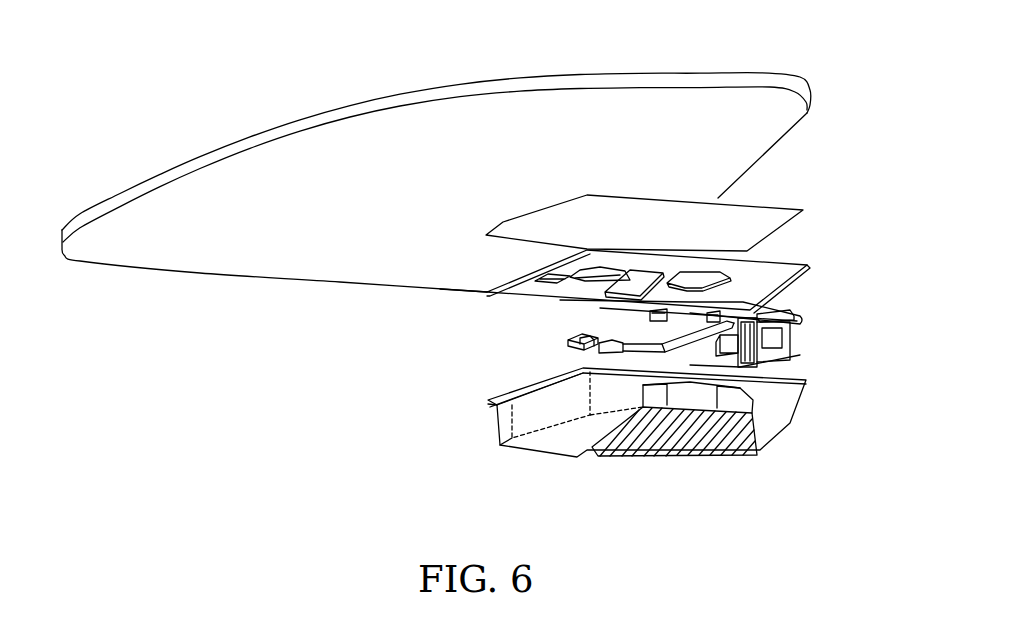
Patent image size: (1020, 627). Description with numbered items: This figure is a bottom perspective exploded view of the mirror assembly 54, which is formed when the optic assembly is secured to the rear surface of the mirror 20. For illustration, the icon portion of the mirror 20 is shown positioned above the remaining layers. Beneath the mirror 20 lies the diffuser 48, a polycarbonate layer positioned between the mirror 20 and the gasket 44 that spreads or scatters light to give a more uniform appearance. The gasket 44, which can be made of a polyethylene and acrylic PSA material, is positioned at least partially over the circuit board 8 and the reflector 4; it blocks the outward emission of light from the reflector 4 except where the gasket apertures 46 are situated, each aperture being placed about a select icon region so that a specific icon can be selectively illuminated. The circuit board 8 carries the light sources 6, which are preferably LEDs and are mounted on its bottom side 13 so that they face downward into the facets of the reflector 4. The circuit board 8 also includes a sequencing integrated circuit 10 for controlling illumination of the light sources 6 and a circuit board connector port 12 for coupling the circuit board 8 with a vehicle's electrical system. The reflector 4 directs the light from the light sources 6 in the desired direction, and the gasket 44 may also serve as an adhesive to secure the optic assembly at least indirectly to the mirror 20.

The mirror 20 is at (728, 98).
The diffuser 48 is at (775, 212).
The gasket apertures 46 is at (762, 284).
The gasket 44 is at (508, 294).
The sequencing integrated circuit 10 is at (762, 364).
The circuit board 8 is at (786, 320).
The circuit board connector port 12 is at (780, 348).
The light sources 6 is at (585, 350).
The bottom side 13 is at (687, 312).
The reflector 4 is at (525, 425).
The mirror assembly 54 is at (303, 368).